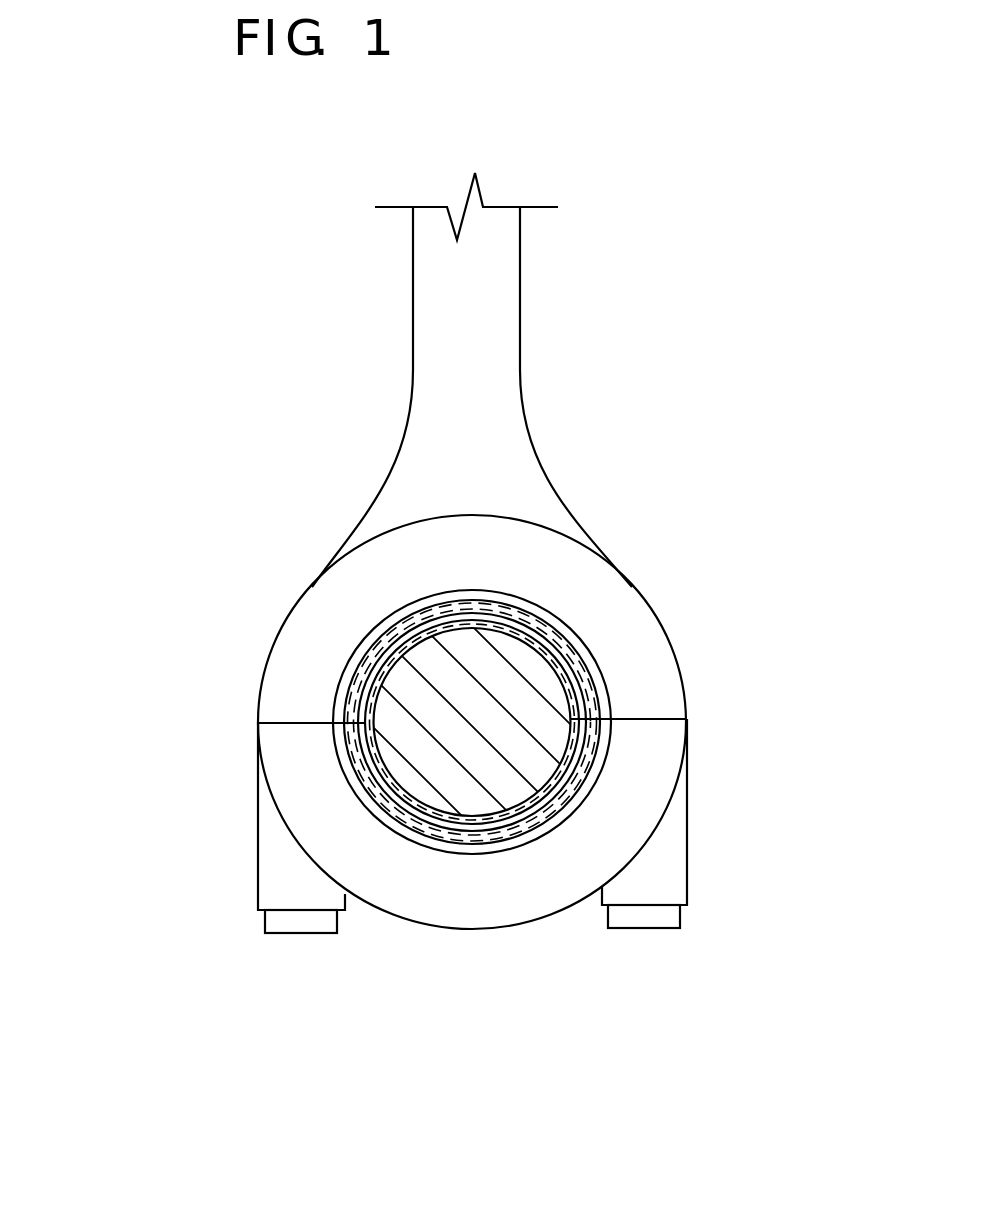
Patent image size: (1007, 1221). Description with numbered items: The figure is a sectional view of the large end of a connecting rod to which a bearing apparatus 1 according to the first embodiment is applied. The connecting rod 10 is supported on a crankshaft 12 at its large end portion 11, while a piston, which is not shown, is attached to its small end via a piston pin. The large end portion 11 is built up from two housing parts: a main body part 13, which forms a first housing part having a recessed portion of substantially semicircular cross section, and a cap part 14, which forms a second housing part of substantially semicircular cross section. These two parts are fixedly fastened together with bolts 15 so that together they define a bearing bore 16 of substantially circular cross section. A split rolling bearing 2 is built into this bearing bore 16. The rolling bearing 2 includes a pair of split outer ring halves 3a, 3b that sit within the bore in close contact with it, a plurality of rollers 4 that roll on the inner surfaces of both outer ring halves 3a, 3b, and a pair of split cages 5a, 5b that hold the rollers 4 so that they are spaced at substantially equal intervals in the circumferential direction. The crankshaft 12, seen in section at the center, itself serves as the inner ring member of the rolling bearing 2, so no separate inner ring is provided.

The bearing apparatus 1 is at (715, 652).
The split rolling bearing 2 is at (492, 847).
The split outer ring half 3a is at (452, 598).
The split outer ring half 3b is at (455, 853).
The rollers 4 is at (417, 606).
The split cage 5a is at (527, 633).
The split cage 5b is at (418, 810).
The connecting rod 10 is at (615, 537).
The large end portion 11 is at (110, 663).
The crankshaft 12 is at (422, 708).
The main body part 13 is at (282, 683).
The cap part 14 is at (273, 853).
The bolts 15 is at (312, 922).
The bearing bore 16 is at (565, 650).